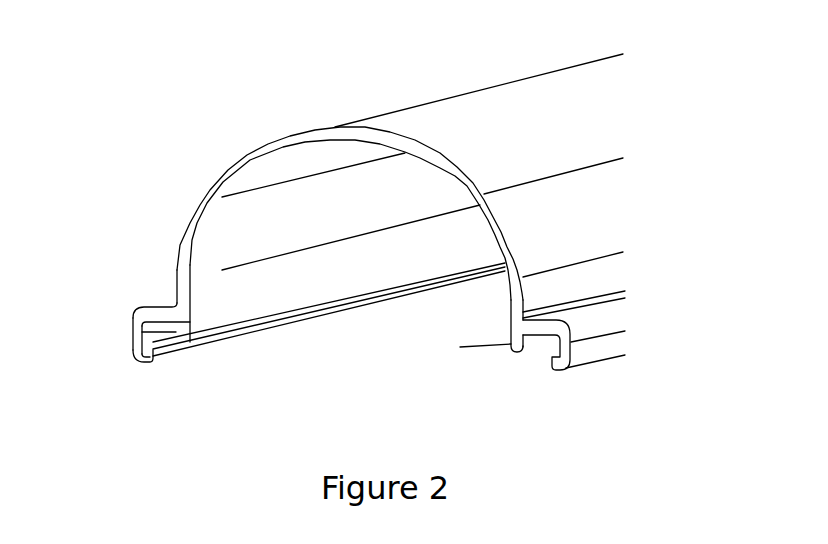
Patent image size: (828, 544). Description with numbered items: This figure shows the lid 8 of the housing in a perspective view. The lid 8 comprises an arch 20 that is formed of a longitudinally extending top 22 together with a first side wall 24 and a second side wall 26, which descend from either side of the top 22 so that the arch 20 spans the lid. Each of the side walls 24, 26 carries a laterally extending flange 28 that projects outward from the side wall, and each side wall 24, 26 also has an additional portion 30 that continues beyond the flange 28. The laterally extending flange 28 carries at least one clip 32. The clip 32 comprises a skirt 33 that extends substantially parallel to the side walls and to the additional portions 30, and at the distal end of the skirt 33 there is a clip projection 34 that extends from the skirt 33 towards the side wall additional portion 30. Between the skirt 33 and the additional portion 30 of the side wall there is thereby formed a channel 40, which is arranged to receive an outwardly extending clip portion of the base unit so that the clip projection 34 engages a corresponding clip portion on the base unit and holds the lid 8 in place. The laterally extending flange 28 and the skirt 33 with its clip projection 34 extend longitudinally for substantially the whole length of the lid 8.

The lid 8 is at (313, 104).
The arch 20 is at (249, 157).
The top 22 is at (387, 100).
The first side wall 24 is at (177, 264).
The second side wall 26 is at (588, 272).
The laterally extending flange 28 is at (165, 307).
The additional portion 30 is at (208, 336).
The clip 32 is at (593, 348).
The skirt 33 is at (134, 326).
The clip projection 34 is at (140, 356).
The channel 40 is at (162, 328).